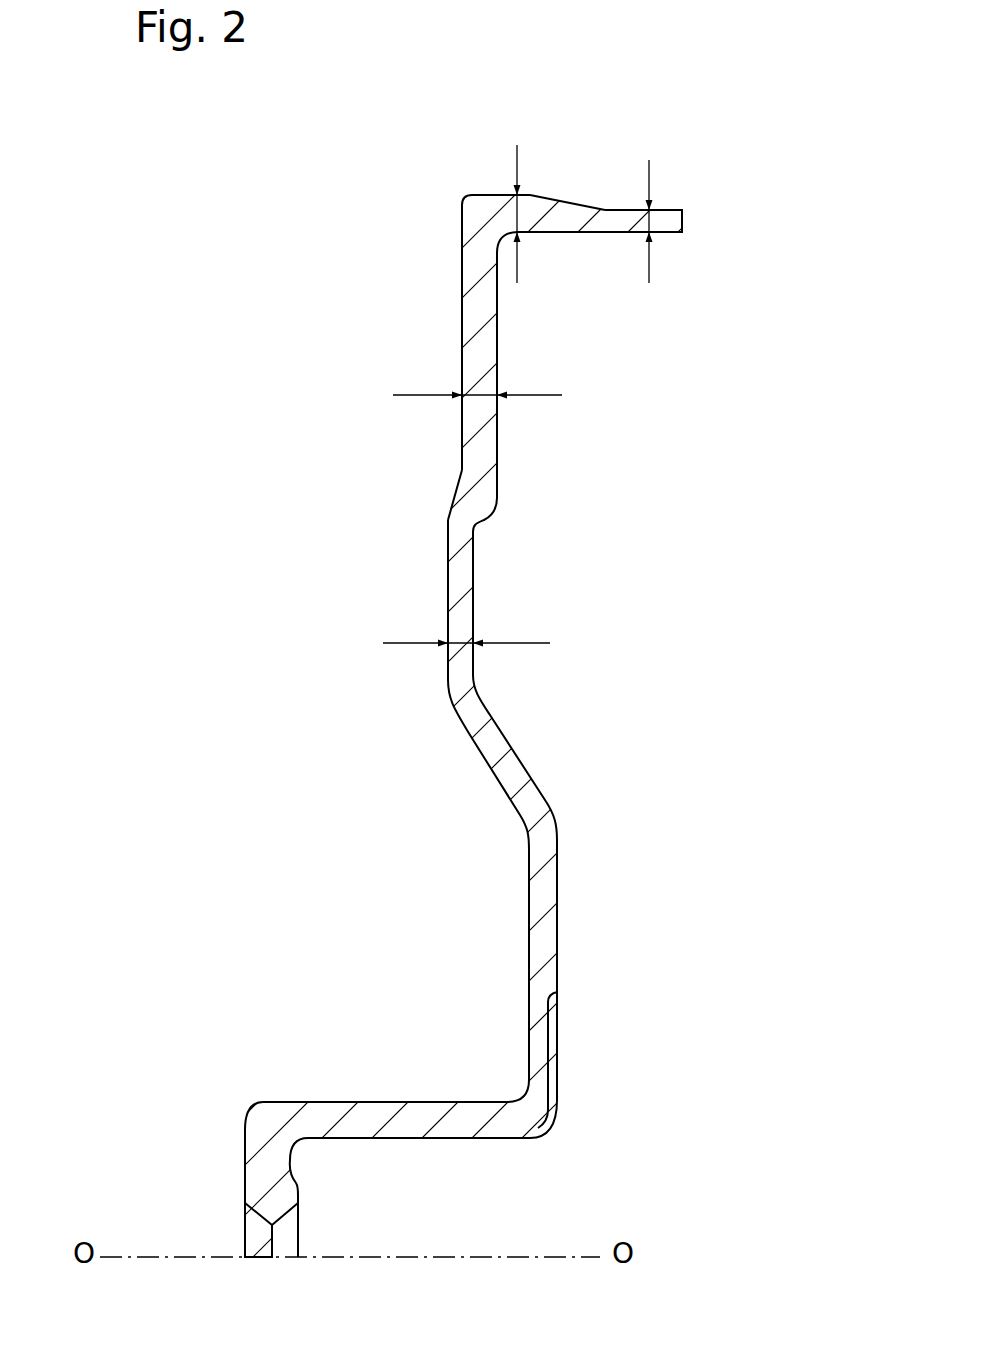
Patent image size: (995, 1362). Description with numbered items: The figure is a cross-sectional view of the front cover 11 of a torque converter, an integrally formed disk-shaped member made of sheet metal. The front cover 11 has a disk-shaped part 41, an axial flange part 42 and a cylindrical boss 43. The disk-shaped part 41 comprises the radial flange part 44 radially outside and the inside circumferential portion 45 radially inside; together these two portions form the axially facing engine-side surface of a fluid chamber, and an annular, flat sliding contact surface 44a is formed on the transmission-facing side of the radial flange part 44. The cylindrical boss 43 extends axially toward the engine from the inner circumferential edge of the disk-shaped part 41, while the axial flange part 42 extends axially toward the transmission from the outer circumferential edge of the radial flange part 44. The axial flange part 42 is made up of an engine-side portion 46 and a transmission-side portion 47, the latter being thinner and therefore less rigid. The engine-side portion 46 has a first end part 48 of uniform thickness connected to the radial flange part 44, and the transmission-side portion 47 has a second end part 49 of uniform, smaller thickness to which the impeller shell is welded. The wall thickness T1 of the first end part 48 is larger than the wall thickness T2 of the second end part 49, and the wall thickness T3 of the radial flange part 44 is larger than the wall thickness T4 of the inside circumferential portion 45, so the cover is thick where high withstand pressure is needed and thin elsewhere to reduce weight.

The front cover 11 is at (372, 562).
The disk-shaped part 41 is at (555, 546).
The axial flange part 42 is at (575, 191).
The cylindrical boss 43 is at (407, 1113).
The radial flange part 44 is at (474, 305).
The sliding contact surface 44a is at (498, 332).
The inside circumferential portion 45 is at (458, 668).
The engine-side portion 46 is at (534, 186).
The transmission-side portion 47 is at (697, 211).
The first end part 48 is at (486, 205).
The second end part 49 is at (670, 233).
The wall thickness of the first end part T1 is at (459, 196).
The wall thickness of the second end part T2 is at (675, 192).
The wall thickness of the radial flange part T3 is at (481, 390).
The wall thickness of the inside circumferential portion T4 is at (475, 622).